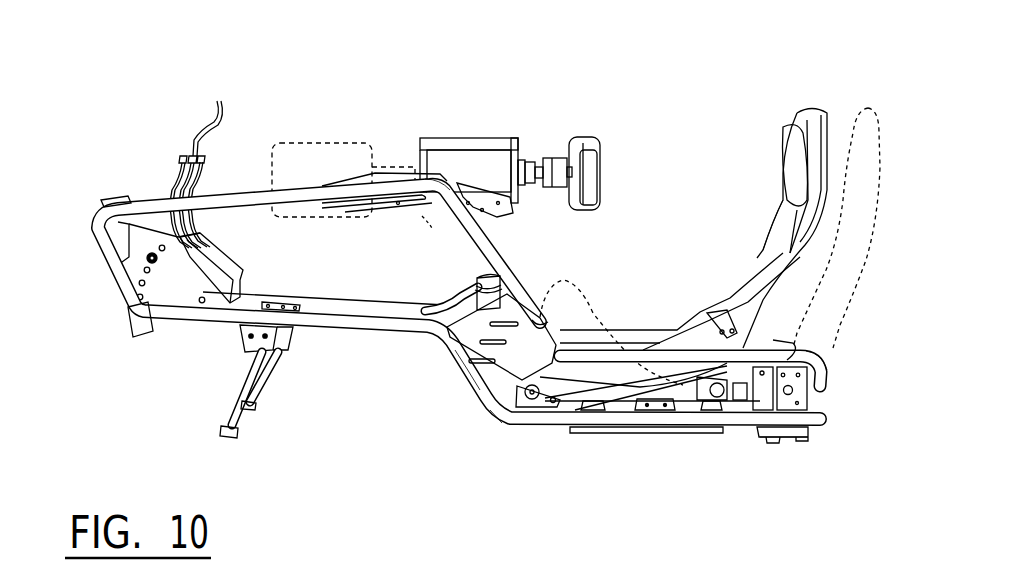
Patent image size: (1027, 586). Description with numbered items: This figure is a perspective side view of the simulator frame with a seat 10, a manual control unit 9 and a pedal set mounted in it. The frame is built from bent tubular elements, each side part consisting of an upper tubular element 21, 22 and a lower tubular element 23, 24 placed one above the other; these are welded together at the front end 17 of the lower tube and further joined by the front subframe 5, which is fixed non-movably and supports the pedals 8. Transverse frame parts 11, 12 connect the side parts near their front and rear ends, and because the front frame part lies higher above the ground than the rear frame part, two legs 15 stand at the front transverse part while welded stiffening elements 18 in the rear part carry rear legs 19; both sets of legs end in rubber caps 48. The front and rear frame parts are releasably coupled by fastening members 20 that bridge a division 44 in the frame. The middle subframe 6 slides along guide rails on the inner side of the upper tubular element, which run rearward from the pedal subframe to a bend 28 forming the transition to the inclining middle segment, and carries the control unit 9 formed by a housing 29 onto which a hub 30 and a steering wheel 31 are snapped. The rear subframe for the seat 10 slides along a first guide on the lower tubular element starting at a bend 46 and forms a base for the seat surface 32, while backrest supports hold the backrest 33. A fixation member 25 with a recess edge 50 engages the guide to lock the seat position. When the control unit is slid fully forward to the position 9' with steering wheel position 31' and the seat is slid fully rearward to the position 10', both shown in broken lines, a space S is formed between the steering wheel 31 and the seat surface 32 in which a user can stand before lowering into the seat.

The front subframe 5 is at (116, 282).
The middle subframe 6 is at (414, 214).
The pedals 8 is at (219, 101).
The manual control unit 9 is at (561, 119).
The operating unit alternative position 9' is at (343, 127).
The seat 10 is at (693, 235).
The seat alternative position 10' is at (869, 187).
The front transverse frame part 11 is at (275, 350).
The rear transverse frame part 12 is at (828, 381).
The legs 15 is at (236, 422).
The front end of lower tube 17 is at (134, 320).
The stiffening elements 18 is at (806, 398).
The rear legs 19 is at (807, 438).
The fastening members 20 is at (474, 392).
The upper tubular element 21 is at (295, 198).
The upper tubular element 22 is at (690, 351).
The lower tubular element 23 is at (383, 308).
The lower tubular element 24 is at (686, 417).
The fixation member 25 is at (171, 290).
The bend 28 is at (428, 180).
The housing 29 is at (486, 150).
The hub 30 is at (550, 188).
The steering wheel 31 is at (615, 188).
The knob position 31' is at (408, 258).
The seat surface 32 is at (547, 365).
The backrest 33 is at (773, 248).
The division 44 is at (537, 320).
The bend 46 is at (491, 418).
The rubber caps 48 is at (232, 438).
The edge of recess 50 is at (203, 303).
The space S is at (449, 296).